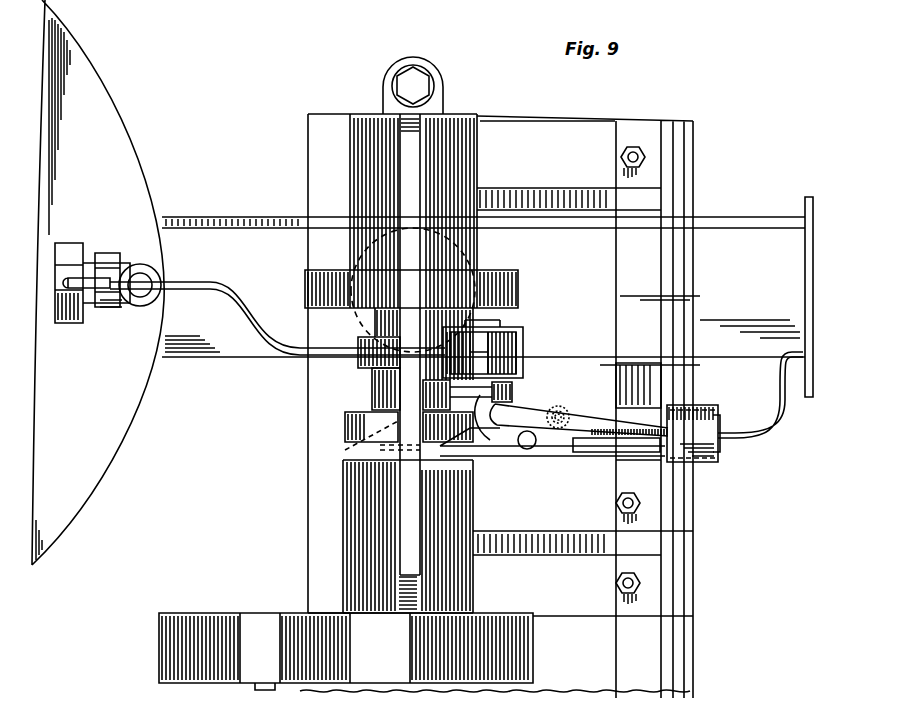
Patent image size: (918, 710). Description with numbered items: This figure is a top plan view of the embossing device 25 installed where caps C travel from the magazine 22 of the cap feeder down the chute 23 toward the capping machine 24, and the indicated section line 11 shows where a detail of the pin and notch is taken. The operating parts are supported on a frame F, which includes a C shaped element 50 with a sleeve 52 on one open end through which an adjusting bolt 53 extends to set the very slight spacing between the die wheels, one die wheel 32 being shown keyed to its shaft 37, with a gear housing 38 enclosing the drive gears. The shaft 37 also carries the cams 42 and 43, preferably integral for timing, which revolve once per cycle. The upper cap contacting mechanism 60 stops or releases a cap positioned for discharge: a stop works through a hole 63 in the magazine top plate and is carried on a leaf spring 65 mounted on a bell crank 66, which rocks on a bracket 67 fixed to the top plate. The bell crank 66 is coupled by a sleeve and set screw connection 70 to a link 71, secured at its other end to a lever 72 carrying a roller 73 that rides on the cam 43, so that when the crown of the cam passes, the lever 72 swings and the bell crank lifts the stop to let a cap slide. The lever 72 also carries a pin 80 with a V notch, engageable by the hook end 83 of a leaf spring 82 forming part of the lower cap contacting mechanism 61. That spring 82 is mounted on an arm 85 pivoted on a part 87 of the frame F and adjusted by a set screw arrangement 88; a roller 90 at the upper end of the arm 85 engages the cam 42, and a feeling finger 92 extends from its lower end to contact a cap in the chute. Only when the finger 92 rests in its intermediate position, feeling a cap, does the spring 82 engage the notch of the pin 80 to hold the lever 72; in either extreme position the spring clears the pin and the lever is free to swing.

The magazine 22 is at (127, 114).
The chute 23 is at (243, 228).
The capping machine 24 is at (805, 199).
The embossing device 25 is at (512, 114).
The die wheel 32 is at (323, 270).
The shaft 37 is at (378, 388).
The gear housing 38 is at (297, 614).
The cam 42 is at (346, 420).
The cam 43 is at (357, 363).
The C shaped element 50 is at (403, 140).
The sleeve 52 is at (398, 76).
The adjusting bolt 53 is at (420, 82).
The upper cap contacting mechanism 60 is at (106, 244).
The lower cap contacting mechanism 61 is at (730, 440).
The hole 63 is at (141, 264).
The leaf spring 65 is at (124, 302).
The bell crank 66 is at (100, 307).
The bracket 67 is at (78, 322).
The sleeve and set screw connection 70 is at (114, 272).
The link 71 is at (220, 272).
The lever 72 is at (515, 332).
The roller 73 is at (523, 346).
The pin 80 is at (513, 389).
The leaf spring 82 is at (638, 385).
The hook end 83 is at (496, 412).
The arm 85 is at (514, 456).
The part of the frame 87 is at (616, 419).
The set screw arrangement 88 is at (566, 412).
The roller 90 is at (352, 452).
The feeling finger 92 is at (764, 420).
The cap C is at (362, 314).
The frame F is at (688, 640).
The section line 11 is at (433, 382).